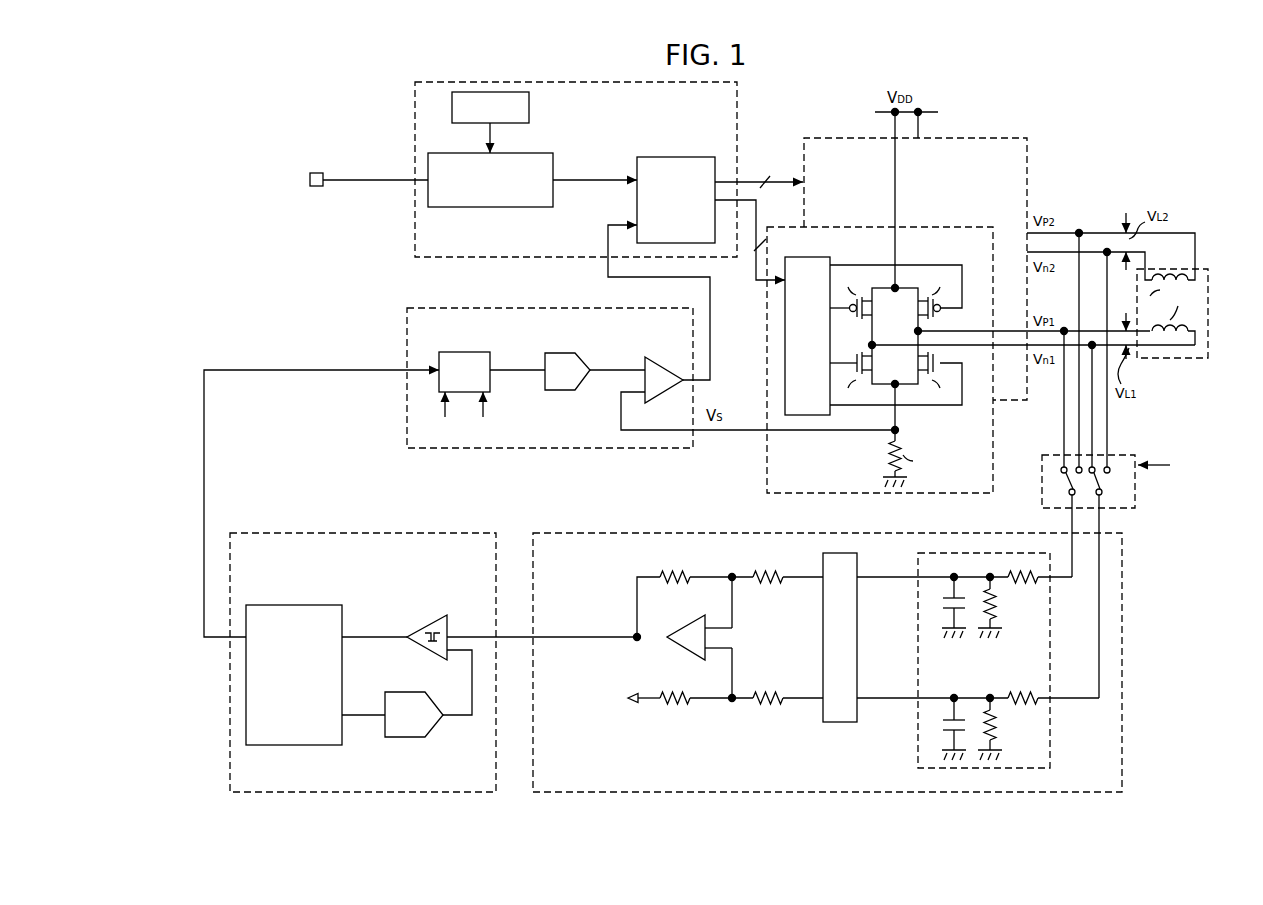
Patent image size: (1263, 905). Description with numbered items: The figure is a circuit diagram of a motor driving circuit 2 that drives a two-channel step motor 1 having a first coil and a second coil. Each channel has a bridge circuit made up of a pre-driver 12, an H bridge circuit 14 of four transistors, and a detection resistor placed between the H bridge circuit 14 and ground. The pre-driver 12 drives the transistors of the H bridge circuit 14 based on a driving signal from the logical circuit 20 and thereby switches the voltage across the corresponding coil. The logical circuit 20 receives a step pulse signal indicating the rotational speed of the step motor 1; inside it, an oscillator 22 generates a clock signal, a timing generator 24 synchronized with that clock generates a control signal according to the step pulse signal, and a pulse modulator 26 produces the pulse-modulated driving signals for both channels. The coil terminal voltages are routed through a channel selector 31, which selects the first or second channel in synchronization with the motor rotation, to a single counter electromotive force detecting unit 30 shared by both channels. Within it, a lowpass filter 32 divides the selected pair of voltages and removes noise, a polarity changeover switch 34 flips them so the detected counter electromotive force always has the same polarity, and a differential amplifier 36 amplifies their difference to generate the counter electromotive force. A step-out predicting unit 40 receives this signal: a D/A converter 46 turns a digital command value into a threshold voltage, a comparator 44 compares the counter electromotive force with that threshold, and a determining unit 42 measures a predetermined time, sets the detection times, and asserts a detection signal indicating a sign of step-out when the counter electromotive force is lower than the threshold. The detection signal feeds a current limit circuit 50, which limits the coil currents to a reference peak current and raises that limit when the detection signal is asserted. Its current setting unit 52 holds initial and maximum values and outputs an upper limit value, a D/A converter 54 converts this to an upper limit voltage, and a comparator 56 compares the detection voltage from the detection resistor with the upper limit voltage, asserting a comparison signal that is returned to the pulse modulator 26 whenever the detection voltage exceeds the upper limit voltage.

The step motor 1 is at (1178, 358).
The motor driving circuit 2 is at (1139, 809).
The pre-driver 12 is at (820, 258).
The H bridge circuit 14 is at (840, 412).
The logical circuit 20 is at (416, 104).
The oscillator 22 is at (529, 100).
The timing generator 24 is at (513, 207).
The pulse modulator 26 is at (672, 157).
The counter electromotive force detecting unit 30 is at (1122, 772).
The channel selector 31 is at (1135, 492).
The lowpass filter 32 is at (1050, 745).
The polarity changeover switch 34 is at (840, 722).
The differential amplifier 36 is at (797, 741).
The step-out predicting unit 40 is at (230, 783).
The determining unit 42 is at (294, 605).
The comparator 44 is at (422, 615).
The D/A converter 46 is at (406, 692).
The current limit circuit 50 is at (590, 448).
The current setting unit 52 is at (464, 352).
The D/A converter 54 is at (562, 353).
The comparator 56 is at (666, 357).